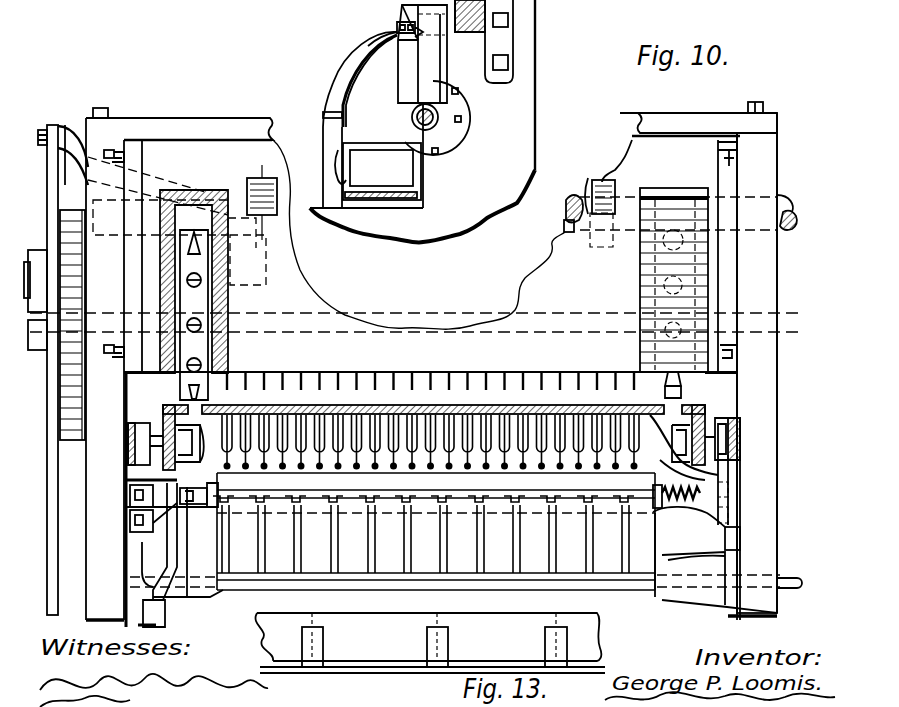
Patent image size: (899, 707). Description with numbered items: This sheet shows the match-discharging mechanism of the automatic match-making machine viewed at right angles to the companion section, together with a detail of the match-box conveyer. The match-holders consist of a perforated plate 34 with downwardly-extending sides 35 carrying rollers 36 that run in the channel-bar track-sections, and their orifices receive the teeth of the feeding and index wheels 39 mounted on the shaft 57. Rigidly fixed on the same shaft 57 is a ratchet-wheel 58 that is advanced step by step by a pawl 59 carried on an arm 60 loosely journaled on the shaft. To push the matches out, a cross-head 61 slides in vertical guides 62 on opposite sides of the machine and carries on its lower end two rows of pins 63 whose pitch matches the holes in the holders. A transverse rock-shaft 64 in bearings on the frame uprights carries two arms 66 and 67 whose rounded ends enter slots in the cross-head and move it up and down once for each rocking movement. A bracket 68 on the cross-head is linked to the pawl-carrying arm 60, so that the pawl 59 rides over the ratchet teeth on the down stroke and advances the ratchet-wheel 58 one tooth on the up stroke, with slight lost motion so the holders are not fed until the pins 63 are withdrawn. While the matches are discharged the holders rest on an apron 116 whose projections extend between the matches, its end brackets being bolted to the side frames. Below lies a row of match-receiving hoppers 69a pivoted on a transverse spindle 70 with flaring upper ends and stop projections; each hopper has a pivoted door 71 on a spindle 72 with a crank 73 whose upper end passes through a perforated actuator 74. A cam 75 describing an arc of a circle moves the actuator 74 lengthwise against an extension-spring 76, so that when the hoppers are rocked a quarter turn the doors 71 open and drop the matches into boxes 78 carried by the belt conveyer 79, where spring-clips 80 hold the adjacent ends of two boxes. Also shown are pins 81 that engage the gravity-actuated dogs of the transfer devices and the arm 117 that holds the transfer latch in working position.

In FIG. 10, the perforated plate 34 is at (543, 406).
In FIG. 10, the downwardly-extending sides 35 is at (706, 420).
In FIG. 10, the rollers 36 is at (740, 437).
In FIG. 10, the feeding and index wheels 39 is at (196, 351).
In FIG. 10, the shaft 57 is at (422, 320).
In FIG. 10, the ratchet-wheel 58 is at (62, 418).
In FIG. 10, the pawl 59 is at (50, 178).
In FIG. 10, the arm 60 is at (40, 256).
In FIG. 10, the cross-head 61 is at (193, 229).
In FIG. 10, the vertical guides 62 is at (732, 172).
In FIG. 10, the pins 63 is at (438, 384).
In FIG. 10, the rock-shaft 64 is at (565, 224).
In FIG. 10, the arm 66 is at (266, 185).
In FIG. 10, the arm 67 is at (617, 192).
In FIG. 10, the bracket 68 is at (62, 126).
In FIG. 10, the match-receiving hoppers 69a is at (432, 77).
In FIG. 10, the spindle 70 is at (433, 124).
In FIG. 10, the pivoted door 71 is at (418, 72).
In FIG. 10, the spindle 72 is at (388, 45).
In FIG. 10, the crank 73 is at (404, 16).
In FIG. 10, the perforated actuator 74 is at (397, 30).
In FIG. 10, the cam 75 is at (330, 100).
In FIG. 10, the extension-spring 76 is at (676, 510).
In FIG. 10, the boxes 78 is at (382, 171).
In FIG. 13, the boxes 78 is at (428, 637).
In FIG. 13, the belt conveyer 79 is at (420, 672).
In FIG. 10, the spring-clips 80 is at (340, 175).
In FIG. 13, the spring-clips 80 is at (450, 641).
In FIG. 10, the pins 81 is at (432, 440).
In FIG. 10, the apron 116 is at (705, 480).
In FIG. 10, the arm 117 is at (128, 446).